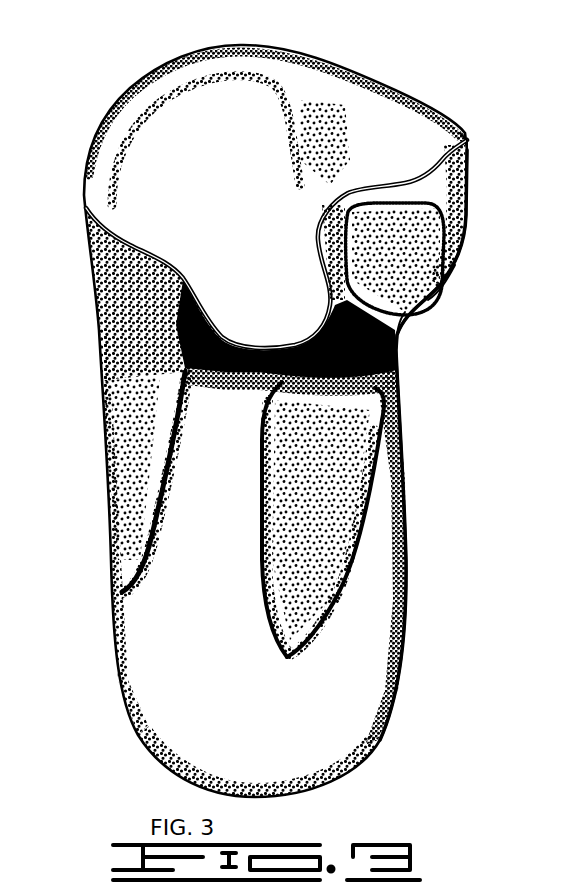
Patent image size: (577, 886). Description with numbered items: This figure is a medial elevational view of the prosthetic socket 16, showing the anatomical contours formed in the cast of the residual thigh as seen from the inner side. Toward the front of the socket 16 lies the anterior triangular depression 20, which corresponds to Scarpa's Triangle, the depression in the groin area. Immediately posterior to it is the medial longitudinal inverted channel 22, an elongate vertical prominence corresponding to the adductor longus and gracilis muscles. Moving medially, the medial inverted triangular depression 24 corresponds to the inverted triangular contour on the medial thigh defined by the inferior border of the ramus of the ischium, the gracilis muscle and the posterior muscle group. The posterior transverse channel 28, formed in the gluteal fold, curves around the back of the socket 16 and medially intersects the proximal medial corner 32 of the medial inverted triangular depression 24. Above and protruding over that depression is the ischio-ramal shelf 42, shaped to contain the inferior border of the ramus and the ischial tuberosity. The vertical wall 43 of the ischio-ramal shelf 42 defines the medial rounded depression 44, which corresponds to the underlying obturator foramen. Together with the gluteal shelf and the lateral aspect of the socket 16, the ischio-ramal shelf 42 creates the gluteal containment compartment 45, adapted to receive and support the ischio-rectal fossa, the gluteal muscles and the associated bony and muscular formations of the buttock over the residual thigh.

The socket 16 is at (360, 29).
The anterior triangular depression 20 is at (132, 348).
The medial longitudinal inverted channel 22 is at (232, 386).
The medial inverted triangular depression 24 is at (335, 471).
The posterior transverse channel 28 is at (395, 330).
The proximal medial corner 32 is at (372, 400).
The ischio-ramal shelf 42 is at (433, 305).
The vertical wall 43 is at (373, 186).
The medial rounded depression 44 is at (392, 250).
The gluteal containment compartment 45 is at (469, 148).